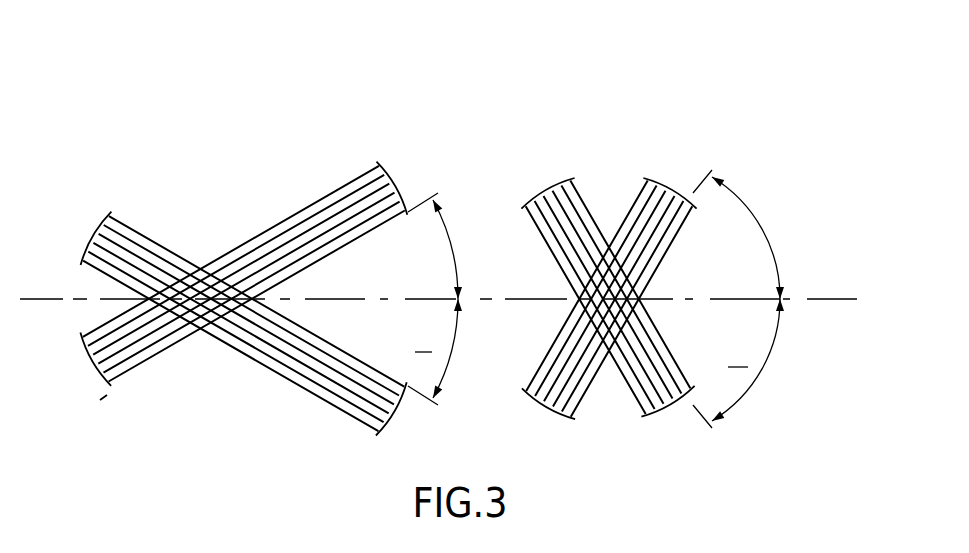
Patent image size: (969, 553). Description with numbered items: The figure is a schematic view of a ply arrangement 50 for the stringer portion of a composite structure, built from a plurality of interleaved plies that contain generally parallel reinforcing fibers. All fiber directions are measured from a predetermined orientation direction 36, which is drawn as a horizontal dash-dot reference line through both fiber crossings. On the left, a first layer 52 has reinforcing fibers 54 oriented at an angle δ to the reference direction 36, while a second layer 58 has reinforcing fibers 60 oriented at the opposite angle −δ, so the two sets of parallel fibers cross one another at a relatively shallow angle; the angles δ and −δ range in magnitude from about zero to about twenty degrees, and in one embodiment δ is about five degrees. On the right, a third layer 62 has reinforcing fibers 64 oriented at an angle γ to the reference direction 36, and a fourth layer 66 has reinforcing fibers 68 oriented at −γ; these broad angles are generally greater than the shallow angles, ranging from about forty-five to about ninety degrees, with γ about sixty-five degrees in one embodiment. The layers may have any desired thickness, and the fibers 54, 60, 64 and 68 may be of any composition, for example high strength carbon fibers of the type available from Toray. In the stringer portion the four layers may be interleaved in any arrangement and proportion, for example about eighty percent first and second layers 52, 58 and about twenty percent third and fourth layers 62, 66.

The ply arrangement 50 is at (712, 70).
The predetermined orientation direction 36 is at (790, 299).
The first layer 52 is at (382, 165).
The reinforcing fibers 54 is at (333, 188).
The second layer 58 is at (99, 234).
The reinforcing fibers 60 is at (122, 226).
The third layer 62 is at (661, 182).
The reinforcing fibers 64 is at (672, 248).
The fourth layer 66 is at (547, 195).
The reinforcing fibers 68 is at (529, 223).